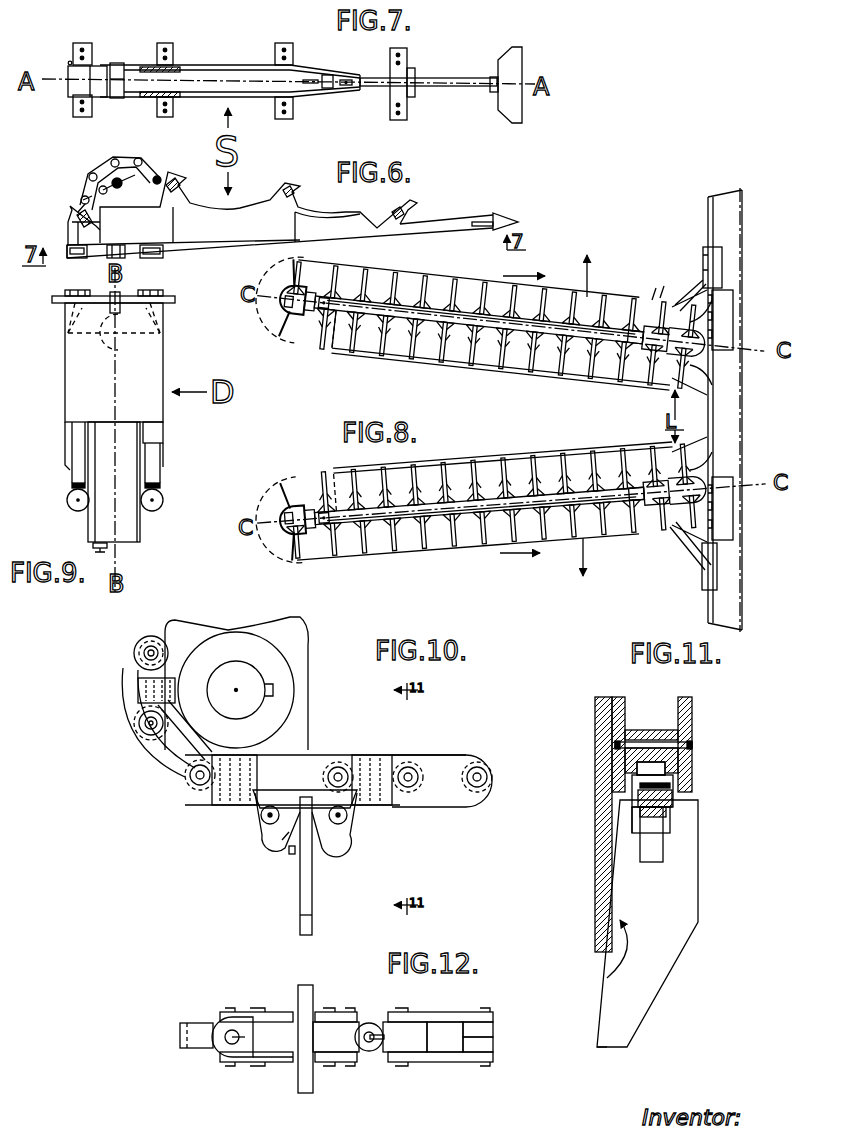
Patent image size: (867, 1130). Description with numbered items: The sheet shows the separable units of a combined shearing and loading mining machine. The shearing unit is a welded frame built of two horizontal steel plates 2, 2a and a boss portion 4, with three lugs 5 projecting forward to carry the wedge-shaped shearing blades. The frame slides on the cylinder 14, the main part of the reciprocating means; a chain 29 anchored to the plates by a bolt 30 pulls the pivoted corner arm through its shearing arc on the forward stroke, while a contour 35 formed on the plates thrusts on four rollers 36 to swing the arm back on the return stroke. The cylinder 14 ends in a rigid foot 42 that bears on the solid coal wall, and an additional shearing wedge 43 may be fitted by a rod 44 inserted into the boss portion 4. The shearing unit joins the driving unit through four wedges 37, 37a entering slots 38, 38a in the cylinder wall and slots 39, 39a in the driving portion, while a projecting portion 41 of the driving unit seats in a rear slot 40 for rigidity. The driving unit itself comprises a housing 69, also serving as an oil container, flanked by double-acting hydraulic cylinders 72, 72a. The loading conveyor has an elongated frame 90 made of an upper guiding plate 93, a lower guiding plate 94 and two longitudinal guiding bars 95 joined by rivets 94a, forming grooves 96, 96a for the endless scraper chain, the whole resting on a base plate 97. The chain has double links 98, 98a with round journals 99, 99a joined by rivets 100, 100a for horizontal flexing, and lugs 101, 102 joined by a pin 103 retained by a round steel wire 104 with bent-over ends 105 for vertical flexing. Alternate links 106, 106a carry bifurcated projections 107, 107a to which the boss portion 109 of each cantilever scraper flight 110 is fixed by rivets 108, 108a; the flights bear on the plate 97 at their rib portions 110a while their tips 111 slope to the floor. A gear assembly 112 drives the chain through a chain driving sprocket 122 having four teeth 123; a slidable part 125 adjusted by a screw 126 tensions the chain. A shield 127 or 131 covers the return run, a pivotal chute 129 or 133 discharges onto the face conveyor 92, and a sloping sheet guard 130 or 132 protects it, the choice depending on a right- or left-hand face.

In FIG. 7, the horizontal steel plate 2 is at (320, 64).
In FIG. 6, the horizontal steel plate 2 is at (243, 220).
In FIG. 7, the horizontal steel plate 2a is at (313, 101).
In FIG. 7, the boss portion 4 is at (350, 87).
In FIG. 7, the lug 5 is at (170, 52).
In FIG. 7, the cylinder 14 is at (220, 76).
In FIG. 6, the cylinder 14 is at (222, 250).
In FIG. 6, the chain 29 is at (84, 196).
In FIG. 6, the bolt 30 is at (157, 177).
In FIG. 6, the contour 35 is at (120, 198).
In FIG. 6, the rollers 36 is at (118, 174).
In FIG. 9, the wedge 37 is at (64, 301).
In FIG. 9, the wedge 37a is at (163, 301).
In FIG. 6, the slot 38 is at (78, 259).
In FIG. 6, the slot 38a is at (150, 258).
In FIG. 9, the slot 39 is at (62, 342).
In FIG. 9, the slot 39a is at (165, 345).
In FIG. 7, the slot 40 is at (115, 68).
In FIG. 6, the slot 40 is at (116, 250).
In FIG. 9, the projecting portion 41 is at (106, 331).
In FIG. 7, the foot 42 is at (70, 62).
In FIG. 6, the foot 42 is at (70, 224).
In FIG. 7, the additional shearing wedge 43 is at (513, 73).
In FIG. 6, the additional shearing wedge 43 is at (510, 216).
In FIG. 7, the rod 44 is at (432, 79).
In FIG. 6, the rod 44 is at (433, 226).
In FIG. 9, the housing 69 is at (144, 530).
In FIG. 9, the hydraulic cylinder 72 is at (154, 481).
In FIG. 9, the hydraulic cylinder 72a is at (76, 482).
In FIG. 8, the elongated frame 90 is at (488, 322).
In FIG. 8, the face conveyor 92 is at (727, 232).
In FIG. 11, the upper guiding plate 93 is at (678, 756).
In FIG. 11, the lower guiding plate 94 is at (613, 771).
In FIG. 11, the rivets 94a is at (665, 731).
In FIG. 11, the longitudinal guiding bars 95 is at (648, 732).
In FIG. 8, the groove 96 is at (575, 352).
In FIG. 11, the groove 96 is at (678, 788).
In FIG. 8, the groove 96a is at (608, 325).
In FIG. 8, the plate 97 is at (312, 324).
In FIG. 11, the plate 97 is at (602, 831).
In FIG. 10, the double link 98 is at (445, 793).
In FIG. 12, the double link 98 is at (453, 1025).
In FIG. 12, the double link 98a is at (457, 1061).
In FIG. 12, the round journal 99 is at (481, 1035).
In FIG. 12, the round journal 99a is at (481, 1047).
In FIG. 10, the rivet 100 is at (410, 776).
In FIG. 10, the rivet 100a is at (483, 777).
In FIG. 10, the lug 101 is at (212, 802).
In FIG. 12, the lug 101 is at (415, 1045).
In FIG. 10, the lug 102 is at (183, 764).
In FIG. 12, the lug 102 is at (333, 1052).
In FIG. 12, the pin 103 is at (367, 1043).
In FIG. 12, the round steel wire 104 is at (370, 1026).
In FIG. 12, the bent-over ends 105 is at (384, 1037).
In FIG. 10, the link 106 is at (307, 779).
In FIG. 11, the link 106 is at (666, 818).
In FIG. 12, the link 106 is at (282, 1014).
In FIG. 11, the link 106a is at (637, 808).
In FIG. 12, the link 106a is at (292, 1060).
In FIG. 10, the bifurcated projection 107 is at (283, 828).
In FIG. 10, the bifurcated projection 107a is at (338, 826).
In FIG. 10, the rivet 108 is at (266, 820).
In FIG. 10, the rivet 108a is at (340, 816).
In FIG. 10, the boss portion 109 is at (290, 848).
In FIG. 11, the boss portion 109 is at (653, 846).
In FIG. 8, the cantilever scraper flight 110 is at (462, 290).
In FIG. 10, the cantilever scraper flight 110 is at (305, 877).
In FIG. 11, the cantilever scraper flight 110 is at (658, 950).
In FIG. 12, the cantilever scraper flight 110 is at (309, 1075).
In FIG. 11, the rib portion 110a is at (606, 978).
In FIG. 11, the tip 111 is at (598, 1050).
In FIG. 8, the gear assembly 112 is at (653, 490).
In FIG. 10, the chain driving sprocket 122 is at (207, 652).
In FIG. 10, the teeth 123 is at (296, 628).
In FIG. 8, the slidable part 125 is at (294, 312).
In FIG. 8, the screw 126 is at (331, 310).
In FIG. 8, the shield 127 is at (426, 367).
In FIG. 8, the pivotal chute 129 is at (721, 328).
In FIG. 8, the sloping sheet guard 130 is at (716, 262).
In FIG. 8, the shield 131 is at (506, 458).
In FIG. 8, the sheet guard 132 is at (712, 568).
In FIG. 8, the chute 133 is at (722, 508).